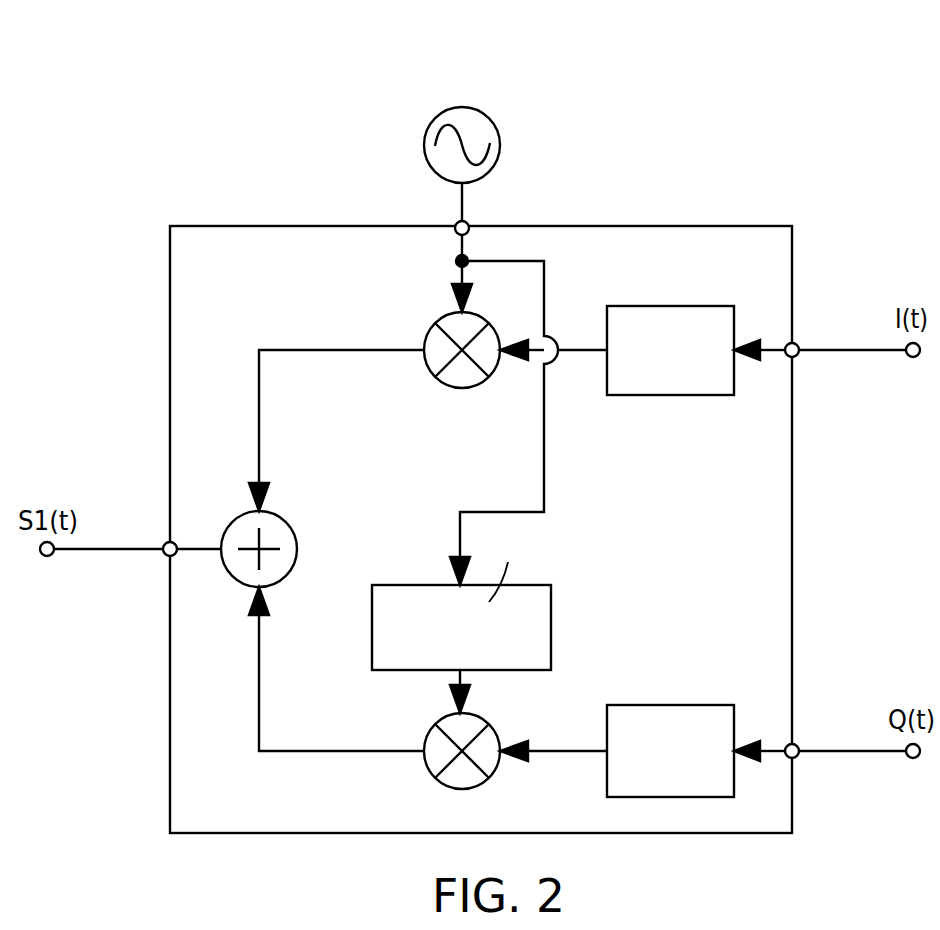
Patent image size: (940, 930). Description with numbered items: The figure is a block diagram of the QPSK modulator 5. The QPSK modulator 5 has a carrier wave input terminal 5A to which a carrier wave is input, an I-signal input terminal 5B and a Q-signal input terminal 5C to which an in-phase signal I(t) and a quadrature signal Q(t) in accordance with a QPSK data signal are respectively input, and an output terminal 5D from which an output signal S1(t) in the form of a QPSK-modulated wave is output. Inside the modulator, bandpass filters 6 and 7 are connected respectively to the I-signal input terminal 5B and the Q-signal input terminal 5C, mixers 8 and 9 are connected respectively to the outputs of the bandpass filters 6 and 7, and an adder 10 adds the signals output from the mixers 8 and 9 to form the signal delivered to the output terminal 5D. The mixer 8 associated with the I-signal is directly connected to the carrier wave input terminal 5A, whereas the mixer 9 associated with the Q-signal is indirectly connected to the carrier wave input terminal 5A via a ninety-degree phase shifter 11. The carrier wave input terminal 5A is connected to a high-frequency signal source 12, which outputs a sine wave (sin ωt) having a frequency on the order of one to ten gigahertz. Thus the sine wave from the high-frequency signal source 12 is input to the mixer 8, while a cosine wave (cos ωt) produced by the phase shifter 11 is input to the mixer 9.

The QPSK modulator 5 is at (719, 225).
The carrier wave input terminal 5A is at (456, 226).
The I-signal input terminal 5B is at (797, 358).
The Q-signal input terminal 5C is at (797, 758).
The output terminal 5D is at (163, 555).
The bandpass filter 6 is at (678, 395).
The bandpass filter 7 is at (678, 705).
The mixer 8 is at (445, 315).
The mixer 9 is at (426, 762).
The adder 10 is at (293, 525).
The 90° phase shifter 11 is at (425, 583).
The high-frequency signal source 12 is at (462, 107).